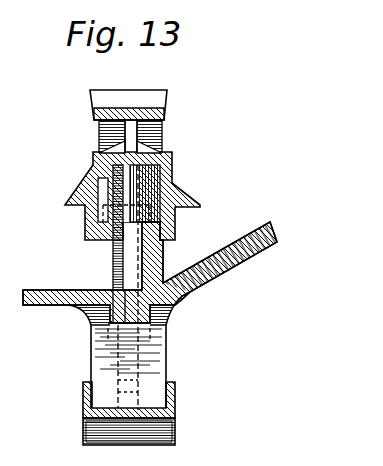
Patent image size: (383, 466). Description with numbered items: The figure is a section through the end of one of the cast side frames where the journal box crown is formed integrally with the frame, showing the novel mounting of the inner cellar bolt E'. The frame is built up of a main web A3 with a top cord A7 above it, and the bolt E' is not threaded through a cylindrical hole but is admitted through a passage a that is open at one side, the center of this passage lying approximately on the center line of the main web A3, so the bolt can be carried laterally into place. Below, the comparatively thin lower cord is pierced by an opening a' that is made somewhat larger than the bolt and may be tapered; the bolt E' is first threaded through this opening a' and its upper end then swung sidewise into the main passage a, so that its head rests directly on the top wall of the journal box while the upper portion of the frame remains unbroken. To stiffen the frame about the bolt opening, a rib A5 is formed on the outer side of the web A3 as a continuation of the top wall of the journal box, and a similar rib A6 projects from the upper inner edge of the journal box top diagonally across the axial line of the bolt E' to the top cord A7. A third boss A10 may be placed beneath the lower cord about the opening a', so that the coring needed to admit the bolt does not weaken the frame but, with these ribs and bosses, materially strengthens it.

The top cord A7 is at (168, 110).
The main web A3 is at (99, 138).
The rib A6 is at (165, 173).
The rib A5 is at (184, 228).
The passage a is at (99, 287).
The third boss A10 is at (170, 327).
The opening a' is at (92, 349).
The bolt E' is at (71, 384).
The cup base F' is at (156, 413).